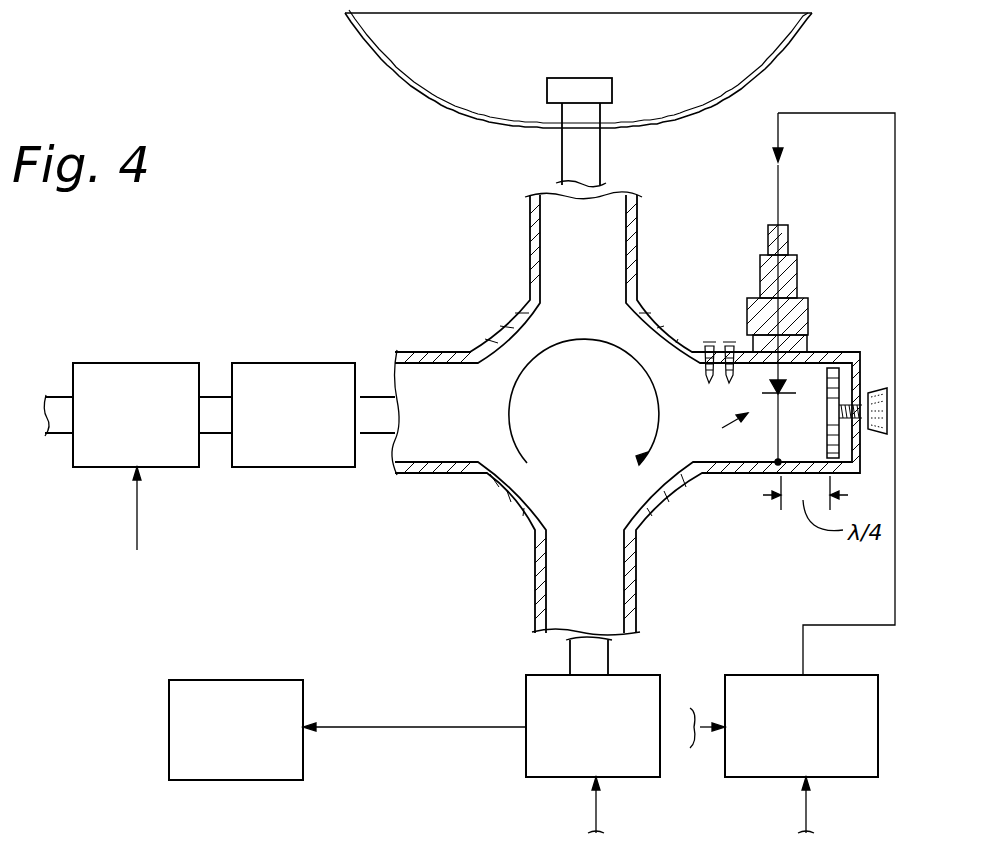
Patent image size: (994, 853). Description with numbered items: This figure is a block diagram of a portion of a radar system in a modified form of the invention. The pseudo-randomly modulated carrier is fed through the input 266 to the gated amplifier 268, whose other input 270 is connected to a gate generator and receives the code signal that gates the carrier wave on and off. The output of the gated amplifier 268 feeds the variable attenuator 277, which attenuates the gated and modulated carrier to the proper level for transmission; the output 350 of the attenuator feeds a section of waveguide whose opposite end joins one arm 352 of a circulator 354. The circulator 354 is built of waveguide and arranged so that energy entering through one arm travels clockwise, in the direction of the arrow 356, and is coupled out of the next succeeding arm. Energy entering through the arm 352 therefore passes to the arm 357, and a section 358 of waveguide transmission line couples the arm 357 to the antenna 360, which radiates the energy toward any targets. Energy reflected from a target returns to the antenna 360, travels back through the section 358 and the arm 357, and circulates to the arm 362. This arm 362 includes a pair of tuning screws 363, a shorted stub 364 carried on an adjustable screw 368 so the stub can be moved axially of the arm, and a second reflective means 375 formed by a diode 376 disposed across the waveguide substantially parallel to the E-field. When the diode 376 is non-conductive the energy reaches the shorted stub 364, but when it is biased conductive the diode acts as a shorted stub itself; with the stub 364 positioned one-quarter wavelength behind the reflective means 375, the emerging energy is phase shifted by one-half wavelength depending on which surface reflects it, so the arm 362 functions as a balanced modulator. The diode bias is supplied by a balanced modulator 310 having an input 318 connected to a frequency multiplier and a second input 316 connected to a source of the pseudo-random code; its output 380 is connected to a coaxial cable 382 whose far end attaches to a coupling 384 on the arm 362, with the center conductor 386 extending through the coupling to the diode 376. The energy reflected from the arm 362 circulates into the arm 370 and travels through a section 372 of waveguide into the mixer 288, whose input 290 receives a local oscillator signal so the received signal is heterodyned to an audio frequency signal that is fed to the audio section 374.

The antenna 360 is at (428, 99).
The section of waveguide transmission line 358 is at (600, 150).
The circulator 354 is at (478, 304).
The arm 357 is at (632, 258).
The output of the variable attenuator 350 is at (364, 382).
The arm 352 is at (400, 475).
The arm 362 is at (760, 477).
The arm 370 is at (636, 590).
The arrow 356 is at (655, 393).
The second reflective means 375 is at (712, 426).
The tuning screws 363 is at (709, 340).
The coupling 384 is at (745, 328).
The center conductor 386 is at (800, 280).
The diode 376 is at (790, 383).
The shorted stub 364 is at (822, 372).
The adjustable screw 368 is at (877, 390).
The coaxial cable 382 is at (873, 206).
The input 266 is at (58, 440).
The gated amplifier 268 is at (205, 348).
The input 270 is at (142, 477).
The variable attenuator 277 is at (333, 456).
The section of transmission line 372 is at (612, 657).
The mixer 288 is at (565, 805).
The input 290 is at (600, 783).
The audio section 374 is at (288, 692).
The balanced modulator 310 is at (833, 673).
The output 380 is at (802, 673).
The input 318 is at (711, 733).
The input 316 is at (812, 782).